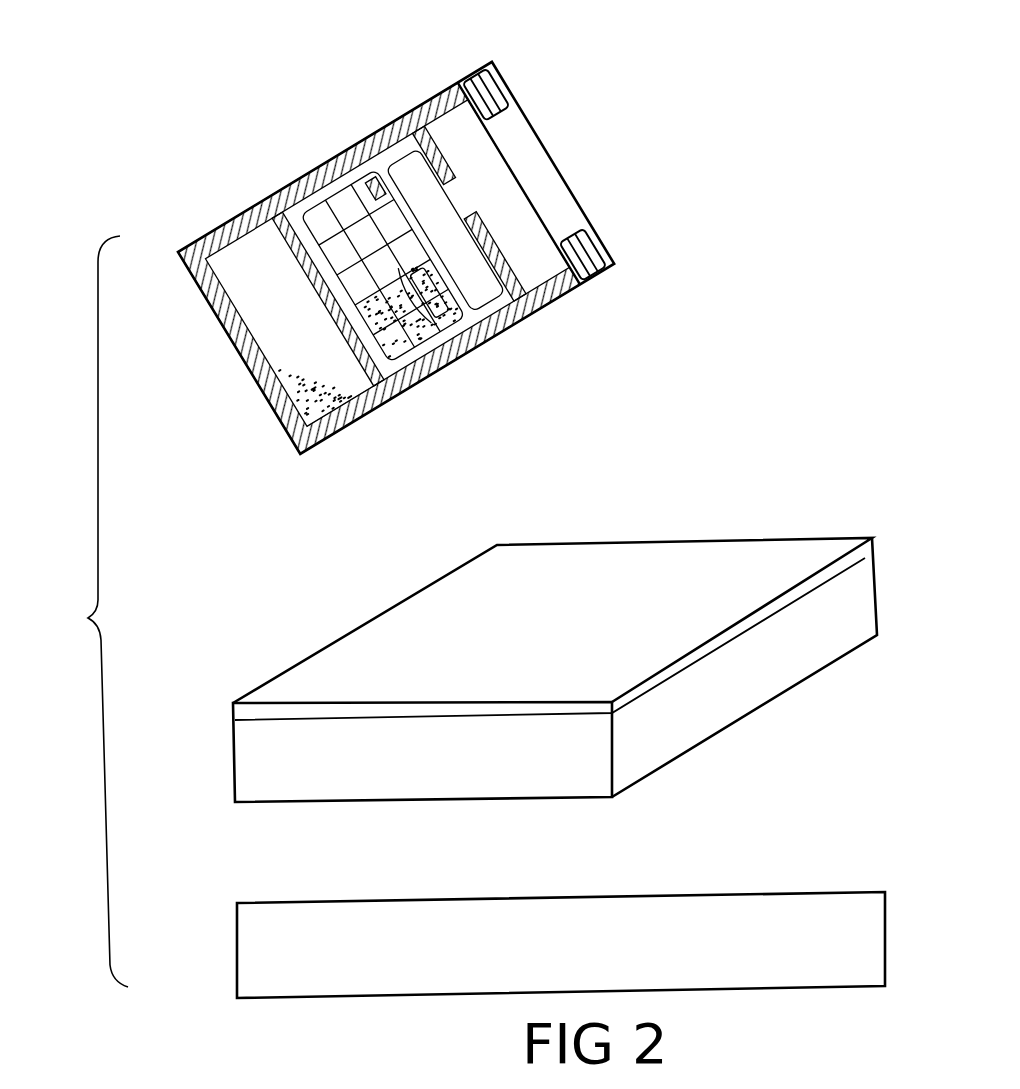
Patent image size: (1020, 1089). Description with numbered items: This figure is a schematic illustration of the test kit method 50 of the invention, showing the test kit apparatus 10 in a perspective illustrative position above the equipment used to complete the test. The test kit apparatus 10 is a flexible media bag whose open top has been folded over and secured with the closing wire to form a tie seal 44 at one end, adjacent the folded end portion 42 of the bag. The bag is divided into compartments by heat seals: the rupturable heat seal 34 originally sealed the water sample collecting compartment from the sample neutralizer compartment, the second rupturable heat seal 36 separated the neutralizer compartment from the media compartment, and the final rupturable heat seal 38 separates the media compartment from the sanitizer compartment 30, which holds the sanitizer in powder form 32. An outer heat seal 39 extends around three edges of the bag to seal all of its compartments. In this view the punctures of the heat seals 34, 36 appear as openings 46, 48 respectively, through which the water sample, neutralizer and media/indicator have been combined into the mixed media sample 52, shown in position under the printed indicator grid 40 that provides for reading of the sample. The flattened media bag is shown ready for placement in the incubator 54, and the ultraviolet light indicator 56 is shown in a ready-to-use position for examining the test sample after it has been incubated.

The test kit apparatus 10 is at (227, 145).
The sanitizer compartment 30 is at (247, 306).
The sanitizer in powder form 32 is at (270, 406).
The rupturable heat seal 34 is at (407, 116).
The second rupturable heat seal 36 is at (363, 180).
The final rupturable heat seal 38 is at (268, 208).
The outer heat seal 39 is at (202, 232).
The indicator grid 40 is at (480, 339).
The end cap 42 is at (457, 80).
The tie seal 44 is at (468, 70).
The opening 46 is at (508, 318).
The opening 48 is at (447, 356).
The test kit method 50 is at (70, 611).
The mixed media sample 52 is at (394, 388).
The incubator 54 is at (445, 760).
The ultraviolet light indicator 56 is at (452, 965).